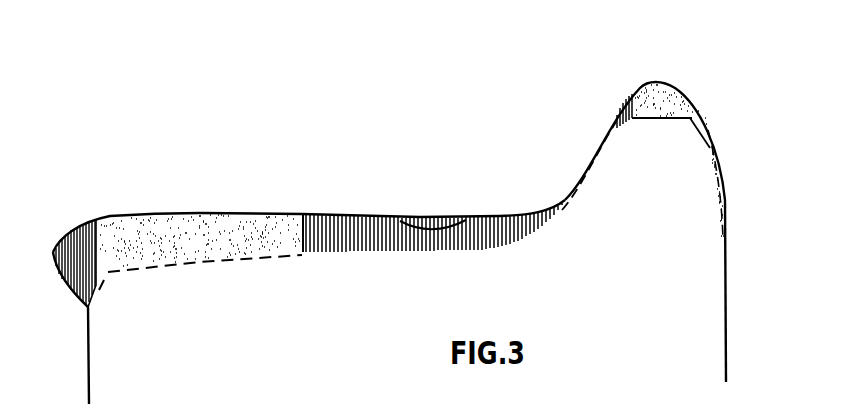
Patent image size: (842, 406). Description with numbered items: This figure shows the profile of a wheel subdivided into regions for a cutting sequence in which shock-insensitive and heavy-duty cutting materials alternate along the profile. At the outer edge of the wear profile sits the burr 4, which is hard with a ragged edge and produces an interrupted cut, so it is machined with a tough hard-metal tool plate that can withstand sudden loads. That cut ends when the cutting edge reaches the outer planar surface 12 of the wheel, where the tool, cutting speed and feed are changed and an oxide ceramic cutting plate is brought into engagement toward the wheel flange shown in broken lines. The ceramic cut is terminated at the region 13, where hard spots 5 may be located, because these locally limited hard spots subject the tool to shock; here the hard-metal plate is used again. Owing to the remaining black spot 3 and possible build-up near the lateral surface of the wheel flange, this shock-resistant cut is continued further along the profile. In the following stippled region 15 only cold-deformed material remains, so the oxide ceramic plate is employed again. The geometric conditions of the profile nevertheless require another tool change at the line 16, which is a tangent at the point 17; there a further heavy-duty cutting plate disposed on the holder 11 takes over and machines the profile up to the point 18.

The black spot 3 is at (596, 160).
The burr 4 is at (72, 286).
The hard spots 5 is at (433, 218).
The holder 11 is at (650, 82).
The outer planar surface 12 is at (120, 232).
The region 13 is at (338, 216).
The region 15 is at (667, 92).
The line 16 is at (683, 122).
The point 17 is at (662, 120).
The point 18 is at (727, 234).